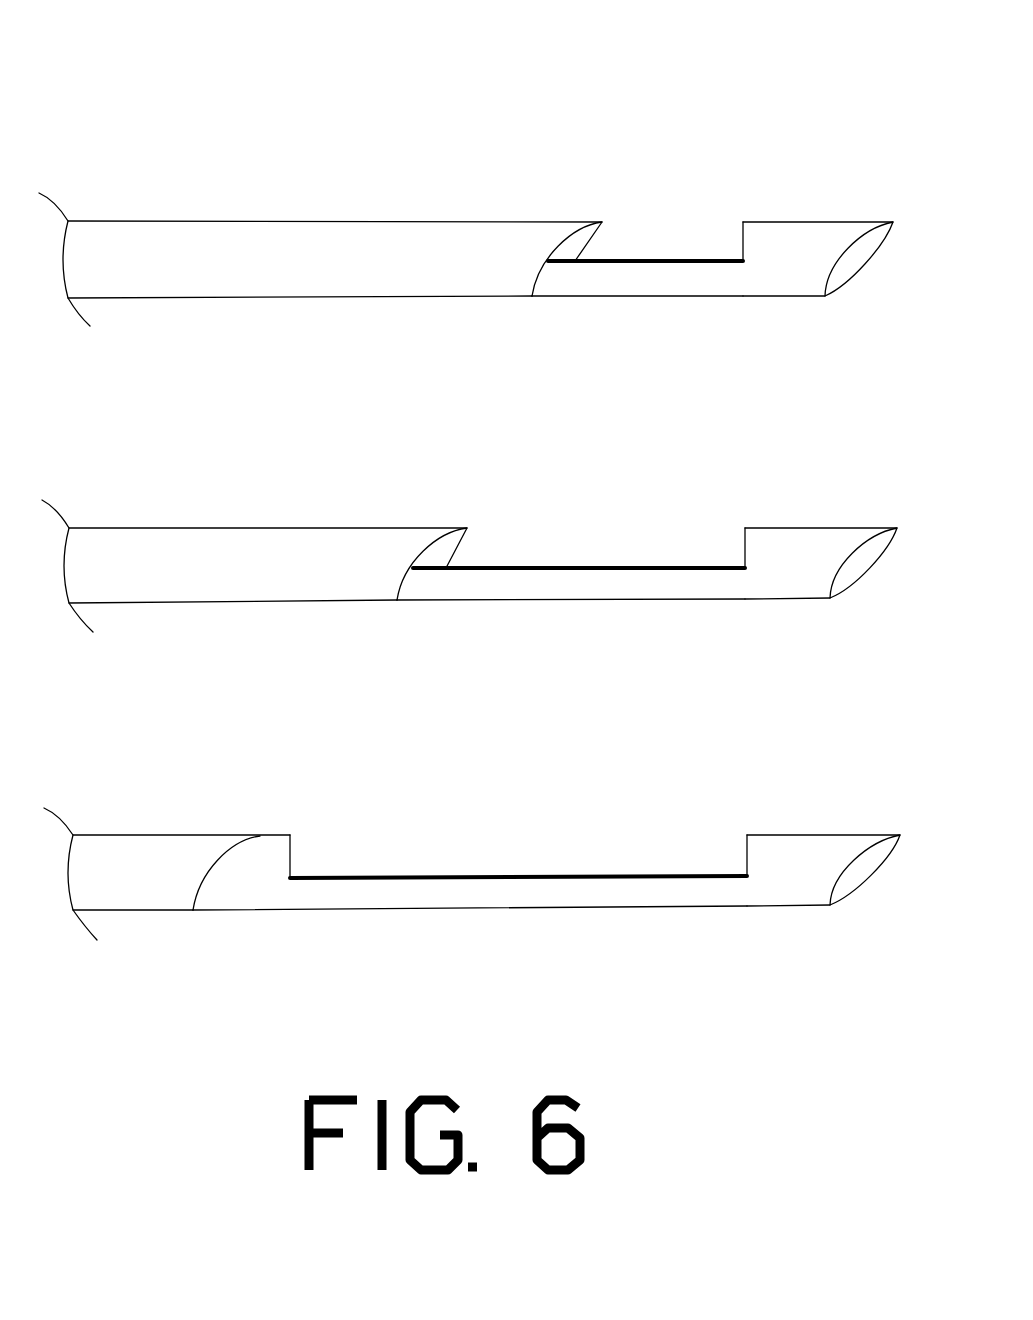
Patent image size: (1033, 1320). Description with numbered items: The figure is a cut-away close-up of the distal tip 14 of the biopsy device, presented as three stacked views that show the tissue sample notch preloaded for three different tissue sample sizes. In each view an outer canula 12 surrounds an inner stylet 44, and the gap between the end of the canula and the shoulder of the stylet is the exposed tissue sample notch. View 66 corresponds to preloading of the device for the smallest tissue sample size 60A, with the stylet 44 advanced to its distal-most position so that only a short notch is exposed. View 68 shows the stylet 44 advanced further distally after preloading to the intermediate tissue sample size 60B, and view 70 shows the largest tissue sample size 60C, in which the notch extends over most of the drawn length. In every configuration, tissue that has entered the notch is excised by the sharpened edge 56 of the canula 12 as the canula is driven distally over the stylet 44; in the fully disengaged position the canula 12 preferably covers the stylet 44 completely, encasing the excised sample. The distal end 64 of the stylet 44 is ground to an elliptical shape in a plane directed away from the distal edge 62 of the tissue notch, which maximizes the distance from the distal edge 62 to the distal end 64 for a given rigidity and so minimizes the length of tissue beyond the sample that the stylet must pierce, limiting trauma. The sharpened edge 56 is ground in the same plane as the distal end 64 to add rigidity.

The canula 12 is at (323, 240).
The distal tip 14 is at (859, 174).
The stylet 44 is at (775, 277).
The sharpened edge 56 is at (532, 297).
The smallest tissue sample size 60A is at (659, 219).
The intermediate tissue sample size 60B is at (624, 513).
The largest tissue sample size 60C is at (560, 820).
The distal edge of tissue notch 62 is at (741, 222).
The distal end of stylet 64 is at (852, 260).
The view 66 is at (356, 124).
The view 68 is at (408, 425).
The view 70 is at (383, 754).